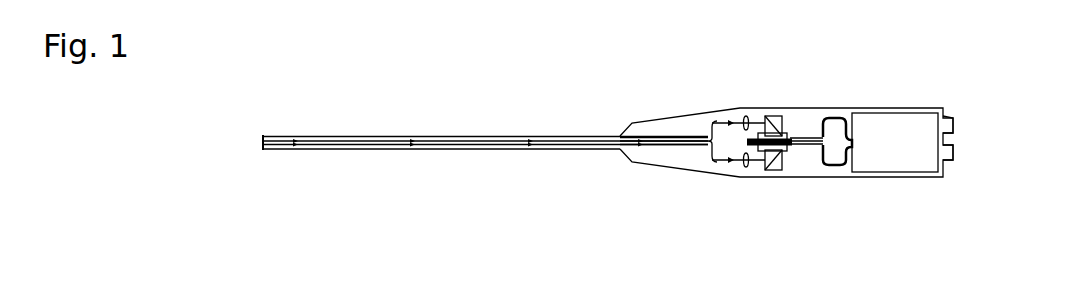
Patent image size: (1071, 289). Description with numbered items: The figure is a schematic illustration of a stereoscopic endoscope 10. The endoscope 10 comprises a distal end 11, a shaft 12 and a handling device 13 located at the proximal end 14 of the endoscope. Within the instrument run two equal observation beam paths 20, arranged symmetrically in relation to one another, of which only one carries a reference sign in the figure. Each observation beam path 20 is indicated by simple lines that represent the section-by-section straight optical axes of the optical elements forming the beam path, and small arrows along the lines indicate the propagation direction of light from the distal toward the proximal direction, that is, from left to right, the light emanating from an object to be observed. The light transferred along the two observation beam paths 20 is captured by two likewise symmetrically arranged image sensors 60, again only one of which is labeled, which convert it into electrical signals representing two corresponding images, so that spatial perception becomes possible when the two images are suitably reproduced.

The stereoscopic endoscope 10 is at (388, 73).
The distal end 11 is at (270, 134).
The shaft 12 is at (444, 146).
The handling device 13 is at (830, 176).
The proximal end 14 is at (941, 106).
The observation beam path 20 is at (690, 146).
The image sensor 60 is at (783, 152).